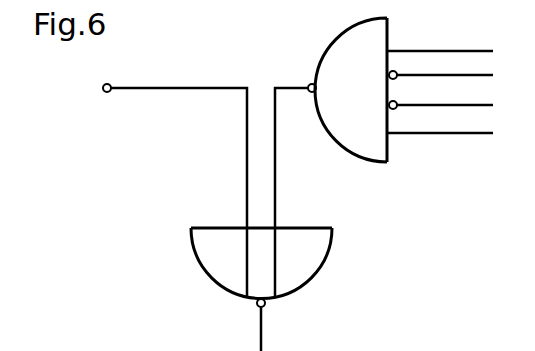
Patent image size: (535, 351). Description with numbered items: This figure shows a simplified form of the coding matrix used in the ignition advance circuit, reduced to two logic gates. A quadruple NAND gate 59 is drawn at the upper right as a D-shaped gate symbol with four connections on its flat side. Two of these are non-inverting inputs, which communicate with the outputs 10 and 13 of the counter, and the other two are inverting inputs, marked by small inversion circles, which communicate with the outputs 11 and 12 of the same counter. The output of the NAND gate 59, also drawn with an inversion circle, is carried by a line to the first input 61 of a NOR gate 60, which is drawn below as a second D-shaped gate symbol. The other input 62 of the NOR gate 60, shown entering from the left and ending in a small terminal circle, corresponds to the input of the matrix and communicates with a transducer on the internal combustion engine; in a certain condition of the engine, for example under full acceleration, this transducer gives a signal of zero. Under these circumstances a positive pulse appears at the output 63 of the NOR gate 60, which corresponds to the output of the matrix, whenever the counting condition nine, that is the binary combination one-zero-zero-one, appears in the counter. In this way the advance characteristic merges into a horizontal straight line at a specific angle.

The quadruple NAND gate 59 is at (341, 50).
The output of the counter 10 is at (452, 51).
The output of the counter 11 is at (453, 75).
The output of the counter 12 is at (453, 105).
The output of the counter 13 is at (452, 133).
The NOR gate 60 is at (315, 253).
The first input of the NOR gate 61 is at (275, 135).
The other input of the NOR gate 62 is at (171, 88).
The output of the NOR gate 63 is at (261, 320).